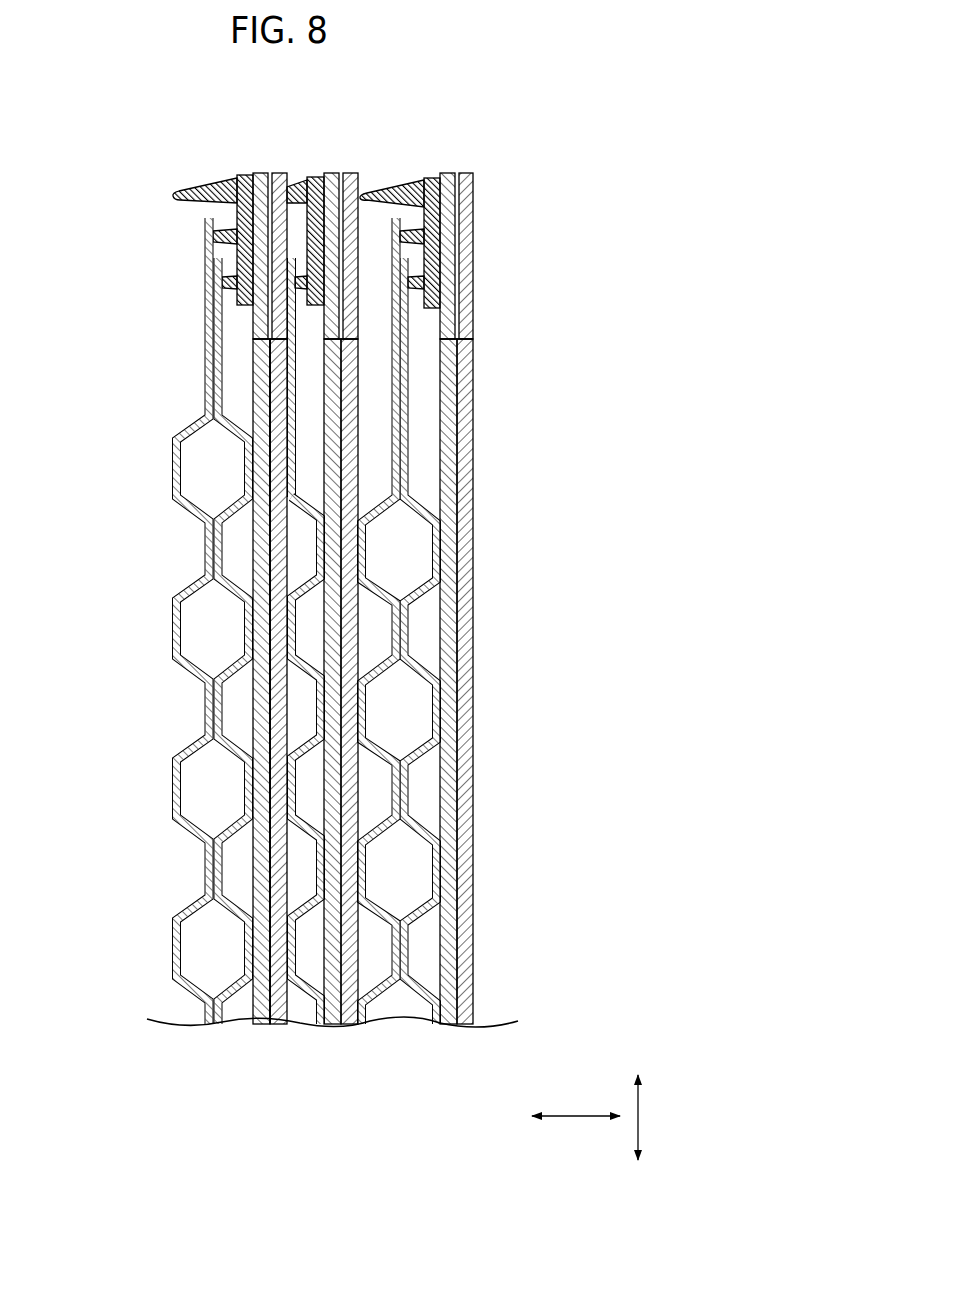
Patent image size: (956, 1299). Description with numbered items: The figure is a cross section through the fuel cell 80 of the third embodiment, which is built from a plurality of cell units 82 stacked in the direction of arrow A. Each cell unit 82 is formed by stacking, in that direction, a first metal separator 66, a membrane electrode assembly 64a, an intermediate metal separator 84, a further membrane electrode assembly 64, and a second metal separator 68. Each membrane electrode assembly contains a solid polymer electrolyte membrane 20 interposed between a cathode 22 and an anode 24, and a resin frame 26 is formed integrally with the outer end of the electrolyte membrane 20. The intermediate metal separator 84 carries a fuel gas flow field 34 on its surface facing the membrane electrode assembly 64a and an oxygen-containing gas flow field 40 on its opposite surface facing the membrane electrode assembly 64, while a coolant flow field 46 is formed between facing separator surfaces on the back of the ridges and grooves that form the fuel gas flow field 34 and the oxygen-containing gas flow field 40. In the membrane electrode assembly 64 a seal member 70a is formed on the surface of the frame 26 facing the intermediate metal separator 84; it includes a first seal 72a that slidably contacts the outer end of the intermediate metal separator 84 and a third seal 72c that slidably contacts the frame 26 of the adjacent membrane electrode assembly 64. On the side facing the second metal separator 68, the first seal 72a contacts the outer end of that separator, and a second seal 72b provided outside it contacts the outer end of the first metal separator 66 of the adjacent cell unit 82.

The fuel cell 80 is at (467, 119).
The cell unit 82 is at (101, 150).
The membrane electrode assembly 64 is at (252, 172).
The first metal separator 66 is at (388, 310).
The second metal separator 68 is at (290, 298).
The membrane electrode assembly 64a is at (322, 341).
The resin frame 26 is at (252, 323).
The anode 24 is at (252, 367).
The solid polymer electrolyte membrane 20 is at (268, 417).
The cathode 22 is at (270, 448).
The seal member 70a is at (296, 178).
The third seal 72c is at (299, 181).
The second seal 72b is at (402, 232).
The first seal 72a is at (412, 283).
The intermediate metal separator 84 is at (312, 502).
The fuel gas flow field 34 is at (236, 546).
The oxygen-containing gas flow field 40 is at (205, 594).
The coolant flow field 46 is at (208, 657).